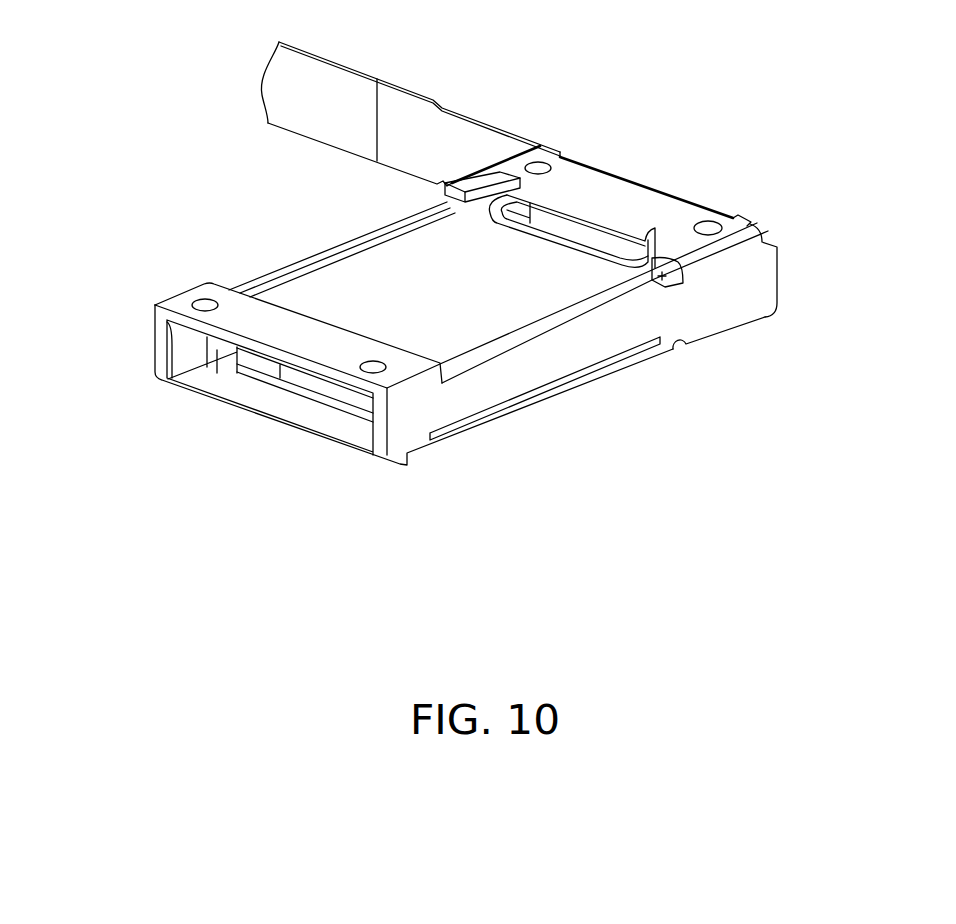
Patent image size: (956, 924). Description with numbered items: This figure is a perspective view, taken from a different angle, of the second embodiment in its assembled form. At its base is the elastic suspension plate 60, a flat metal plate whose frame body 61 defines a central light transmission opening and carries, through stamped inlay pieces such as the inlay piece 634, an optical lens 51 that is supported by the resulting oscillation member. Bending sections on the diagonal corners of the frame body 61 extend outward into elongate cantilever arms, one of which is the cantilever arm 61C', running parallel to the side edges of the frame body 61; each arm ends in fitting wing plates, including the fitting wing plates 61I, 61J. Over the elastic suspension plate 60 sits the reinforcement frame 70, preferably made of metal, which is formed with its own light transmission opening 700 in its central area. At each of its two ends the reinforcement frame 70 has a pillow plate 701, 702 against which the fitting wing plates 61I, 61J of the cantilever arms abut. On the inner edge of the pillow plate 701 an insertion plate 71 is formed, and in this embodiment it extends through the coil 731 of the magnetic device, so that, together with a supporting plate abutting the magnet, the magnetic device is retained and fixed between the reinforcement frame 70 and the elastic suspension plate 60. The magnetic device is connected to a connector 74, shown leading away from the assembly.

The connector 74 is at (401, 105).
The reinforcement frame 70 is at (487, 228).
The insertion plate 71 is at (563, 218).
The coil 731 is at (600, 257).
The pillow plate 701 is at (670, 207).
The pillow plate 702 is at (238, 312).
The light transmission opening 700 is at (681, 276).
The optical lens 51 is at (352, 285).
The elastic suspension plate 60 is at (410, 411).
The frame body 61 is at (512, 412).
The fitting wing plate 61J is at (180, 345).
The cantilever arm 61C' is at (176, 415).
The inlay piece 634 is at (313, 383).
The fitting wing plate 61I is at (368, 432).